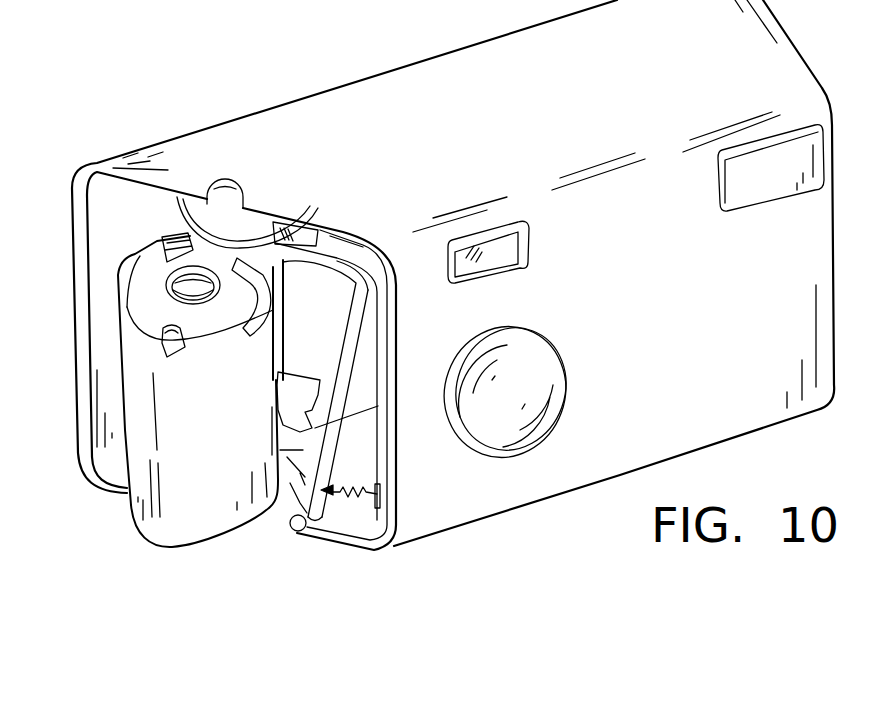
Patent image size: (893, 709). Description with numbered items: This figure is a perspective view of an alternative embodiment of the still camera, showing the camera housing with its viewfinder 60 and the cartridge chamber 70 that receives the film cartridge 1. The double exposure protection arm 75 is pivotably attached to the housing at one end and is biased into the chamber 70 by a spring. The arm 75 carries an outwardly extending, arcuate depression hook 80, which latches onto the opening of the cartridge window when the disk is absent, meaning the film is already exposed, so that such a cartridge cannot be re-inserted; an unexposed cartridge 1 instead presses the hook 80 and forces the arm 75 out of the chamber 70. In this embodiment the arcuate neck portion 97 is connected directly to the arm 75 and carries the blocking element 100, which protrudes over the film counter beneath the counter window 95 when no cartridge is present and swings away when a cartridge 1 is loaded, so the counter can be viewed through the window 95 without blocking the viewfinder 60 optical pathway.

The film cartridge 1 is at (210, 525).
The viewfinder 60 is at (488, 250).
The cartridge chamber 70 is at (100, 293).
The double exposure protection arm 75 is at (355, 402).
The depression hook 80 is at (292, 370).
The counter window 95 is at (233, 183).
The neck portion 97 is at (350, 260).
The blocking element 100 is at (297, 228).